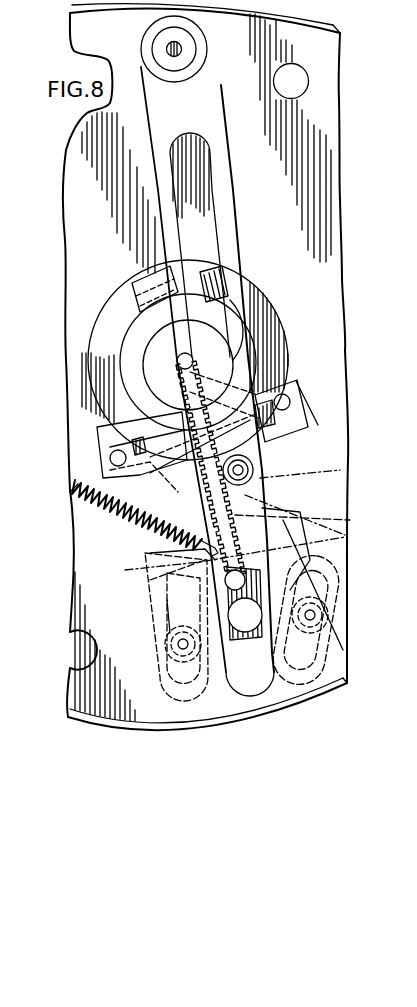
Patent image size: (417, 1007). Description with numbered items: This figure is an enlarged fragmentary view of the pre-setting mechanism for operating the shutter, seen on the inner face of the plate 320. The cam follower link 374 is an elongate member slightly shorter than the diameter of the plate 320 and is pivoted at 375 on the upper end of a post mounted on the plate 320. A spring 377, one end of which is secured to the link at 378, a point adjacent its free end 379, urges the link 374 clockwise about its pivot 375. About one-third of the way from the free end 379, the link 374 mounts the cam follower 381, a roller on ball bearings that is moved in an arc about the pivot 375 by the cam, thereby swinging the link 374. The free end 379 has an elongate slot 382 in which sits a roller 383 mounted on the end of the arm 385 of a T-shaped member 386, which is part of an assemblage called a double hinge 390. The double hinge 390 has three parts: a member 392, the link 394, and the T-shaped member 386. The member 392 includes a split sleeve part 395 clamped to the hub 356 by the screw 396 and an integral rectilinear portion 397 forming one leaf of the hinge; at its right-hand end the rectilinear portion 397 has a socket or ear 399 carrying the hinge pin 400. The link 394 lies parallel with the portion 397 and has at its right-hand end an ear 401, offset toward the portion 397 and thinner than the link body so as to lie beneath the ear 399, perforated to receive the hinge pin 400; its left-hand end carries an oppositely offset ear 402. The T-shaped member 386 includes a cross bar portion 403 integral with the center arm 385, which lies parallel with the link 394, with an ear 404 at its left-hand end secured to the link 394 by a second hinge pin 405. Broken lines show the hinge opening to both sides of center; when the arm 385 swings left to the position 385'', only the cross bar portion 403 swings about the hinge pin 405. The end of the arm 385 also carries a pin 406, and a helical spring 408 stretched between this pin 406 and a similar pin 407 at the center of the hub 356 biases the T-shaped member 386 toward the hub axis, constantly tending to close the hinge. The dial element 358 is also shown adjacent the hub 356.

The plate 320 is at (128, 615).
The hub 356 is at (157, 335).
The dial member 358 is at (122, 297).
The cam follower link 374 is at (232, 221).
The pivot 375 is at (170, 48).
The spring 377 is at (93, 510).
The spring attachment point 378 is at (175, 551).
The free end 379 is at (306, 627).
The cam follower 381 is at (245, 470).
The elongate slot 382 is at (240, 670).
The roller 383 is at (247, 630).
The arm 385 is at (313, 572).
The arm swung to the left 385'' is at (215, 559).
The T-shaped member 386 is at (150, 526).
The double hinge 390 is at (88, 438).
The member 392 is at (257, 353).
The link 394 is at (167, 440).
The split sleeve part 395 is at (217, 318).
The screw 396 is at (224, 280).
The rectilinear portion 397 is at (107, 427).
The socket or ear 399 is at (306, 418).
The hinge pin 400 is at (285, 398).
The ear 401 is at (300, 413).
The offset ear 402 is at (110, 450).
The cross bar portion 403 is at (93, 497).
The ear 404 is at (72, 487).
The second hinge pin 405 is at (120, 465).
The peg or pin 406 is at (245, 580).
The pin 407 is at (157, 363).
The helical spring 408 is at (268, 472).